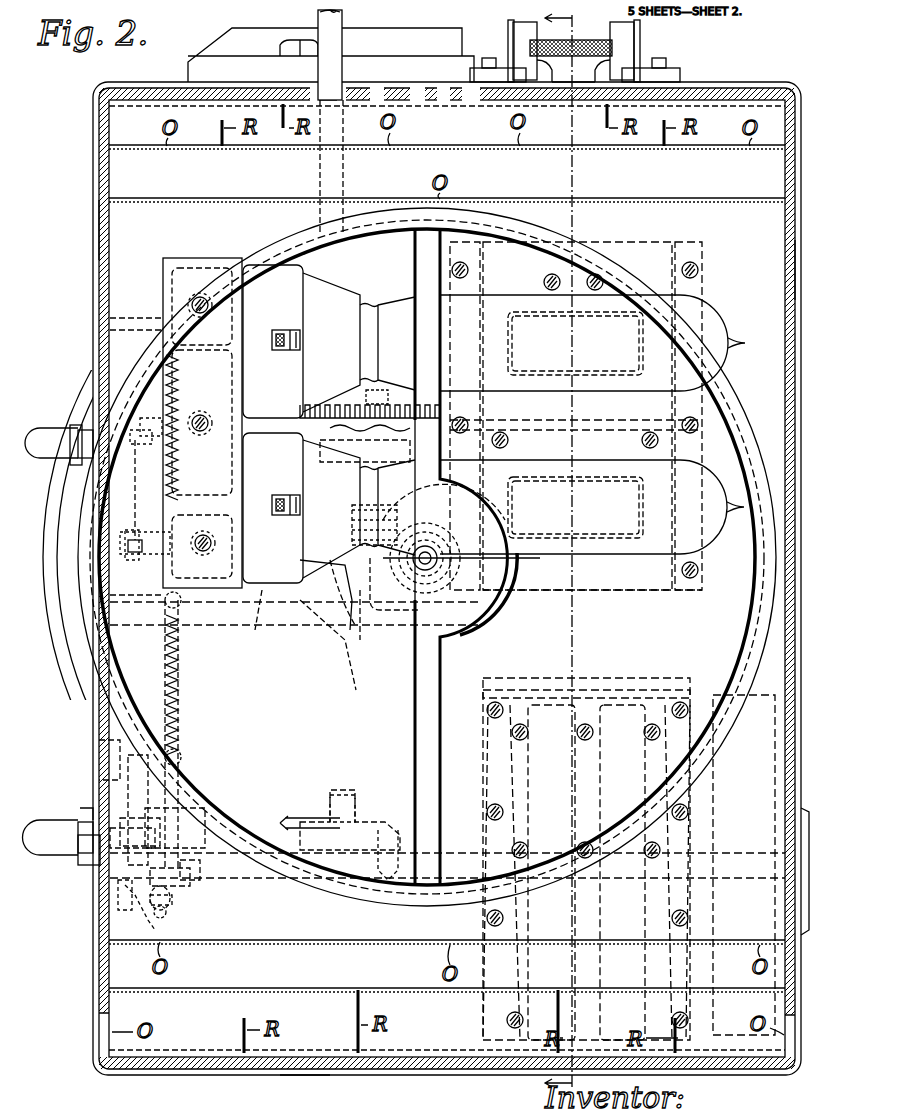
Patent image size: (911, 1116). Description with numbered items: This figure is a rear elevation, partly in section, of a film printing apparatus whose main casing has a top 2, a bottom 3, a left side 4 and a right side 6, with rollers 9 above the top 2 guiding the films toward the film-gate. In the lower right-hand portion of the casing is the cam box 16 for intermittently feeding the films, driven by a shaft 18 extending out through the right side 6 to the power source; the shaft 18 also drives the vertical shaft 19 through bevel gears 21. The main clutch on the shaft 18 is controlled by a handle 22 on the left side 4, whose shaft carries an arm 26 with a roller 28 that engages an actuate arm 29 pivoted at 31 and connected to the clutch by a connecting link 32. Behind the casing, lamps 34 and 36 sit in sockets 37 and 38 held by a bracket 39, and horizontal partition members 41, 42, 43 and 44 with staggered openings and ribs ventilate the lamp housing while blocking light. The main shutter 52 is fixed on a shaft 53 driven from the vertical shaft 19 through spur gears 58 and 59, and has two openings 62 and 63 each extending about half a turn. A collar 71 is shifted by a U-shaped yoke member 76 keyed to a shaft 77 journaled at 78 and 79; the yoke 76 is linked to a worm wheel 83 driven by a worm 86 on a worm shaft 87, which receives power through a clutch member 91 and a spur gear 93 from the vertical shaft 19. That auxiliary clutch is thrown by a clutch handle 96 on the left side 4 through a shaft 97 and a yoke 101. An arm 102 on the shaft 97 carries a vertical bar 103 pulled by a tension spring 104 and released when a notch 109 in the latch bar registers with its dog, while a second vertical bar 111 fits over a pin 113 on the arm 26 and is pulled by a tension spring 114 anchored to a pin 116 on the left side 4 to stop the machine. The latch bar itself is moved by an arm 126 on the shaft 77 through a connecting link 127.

The top 2 is at (720, 92).
The bottom 3 is at (300, 1076).
The left side 4 is at (96, 231).
The right side 6 is at (788, 272).
The rollers 9 is at (520, 36).
The cam box 16 is at (640, 700).
The shaft 18 is at (740, 862).
The vertical shaft 19 is at (330, 690).
The bevel gears 21 is at (380, 850).
The handle 22 is at (55, 848).
The arm 26 is at (122, 900).
The roller 28 is at (175, 900).
The actuate arm 29 is at (130, 795).
The pivot 31 is at (96, 762).
The connecting link 32 is at (252, 870).
The lamp 34 is at (715, 322).
The lamp 36 is at (700, 535).
The socket 37 is at (345, 300).
The socket 38 is at (352, 560).
The bracket 39 is at (190, 582).
The partition member 41 is at (311, 988).
The partition member 42 is at (322, 939).
The partition member 43 is at (276, 197).
The partition member 44 is at (480, 130).
The main shutter 52 is at (210, 812).
The shaft 53 is at (432, 556).
The spur gear 58 is at (265, 592).
The spur gear 59 is at (472, 603).
The shutter opening 62 is at (448, 759).
The shutter opening 63 is at (422, 720).
The collar 71 is at (422, 530).
The yoke member 76 is at (486, 577).
The shaft 77 is at (290, 592).
The journal 78 is at (360, 635).
The journal 79 is at (100, 612).
The worm wheel 83 is at (295, 472).
The worm 86 is at (288, 490).
The worm shaft 87 is at (380, 392).
The clutch member 91 is at (362, 415).
The spur gear 93 is at (424, 403).
The clutch handle 96 is at (42, 436).
The shaft 97 is at (264, 440).
The yoke 101 is at (440, 430).
The arm 102 is at (168, 424).
The vertical bar 103 is at (202, 441).
The tension spring 104 is at (182, 678).
The notch 109 is at (184, 753).
The vertical bar 111 is at (196, 535).
The pin 113 is at (190, 886).
The tension spring 114 is at (191, 427).
The pin 116 is at (130, 318).
The arm 126 is at (134, 528).
The connecting link 127 is at (160, 538).